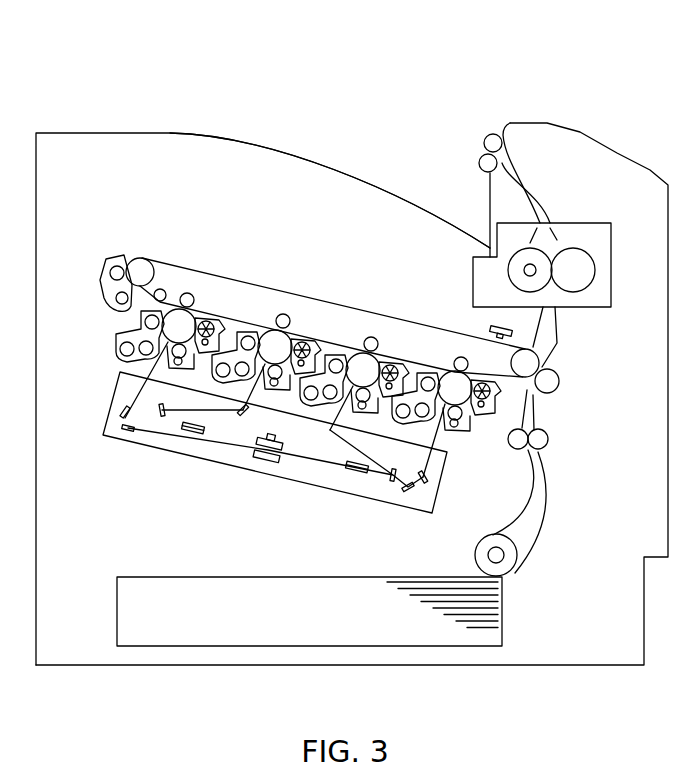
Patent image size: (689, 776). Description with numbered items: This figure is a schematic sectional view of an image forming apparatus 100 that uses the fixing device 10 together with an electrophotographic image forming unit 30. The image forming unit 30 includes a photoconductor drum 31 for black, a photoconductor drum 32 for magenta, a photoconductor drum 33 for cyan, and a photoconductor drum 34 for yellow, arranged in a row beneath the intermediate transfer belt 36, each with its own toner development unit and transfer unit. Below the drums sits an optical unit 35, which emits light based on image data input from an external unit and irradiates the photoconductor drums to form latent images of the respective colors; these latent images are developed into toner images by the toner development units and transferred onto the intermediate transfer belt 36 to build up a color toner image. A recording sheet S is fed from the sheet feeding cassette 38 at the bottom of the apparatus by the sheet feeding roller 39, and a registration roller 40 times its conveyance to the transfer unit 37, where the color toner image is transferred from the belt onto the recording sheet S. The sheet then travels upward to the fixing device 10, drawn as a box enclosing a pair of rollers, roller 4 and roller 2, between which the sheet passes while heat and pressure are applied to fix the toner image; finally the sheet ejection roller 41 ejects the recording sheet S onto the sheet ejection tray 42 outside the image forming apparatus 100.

The image forming apparatus 100 is at (405, 68).
The sheet ejection tray 42 is at (307, 157).
The sheet ejection roller 41 is at (487, 135).
The fixing device 10 is at (558, 265).
The fixing roller 4 is at (515, 248).
The pressure roller 2 is at (600, 283).
The intermediate transfer belt 36 is at (173, 260).
The image forming unit 30 is at (277, 356).
The photoconductor drum for yellow 34 is at (190, 318).
The photoconductor drum for cyan 33 is at (283, 341).
The photoconductor drum for magenta 32 is at (372, 362).
The photoconductor drum for black 31 is at (468, 382).
The optical unit 35 is at (220, 457).
The transfer unit 37 is at (560, 378).
The registration roller 40 is at (548, 438).
The sheet feeding roller 39 is at (500, 535).
The sheet feeding cassette 38 is at (378, 668).
The recording sheet S is at (268, 572).